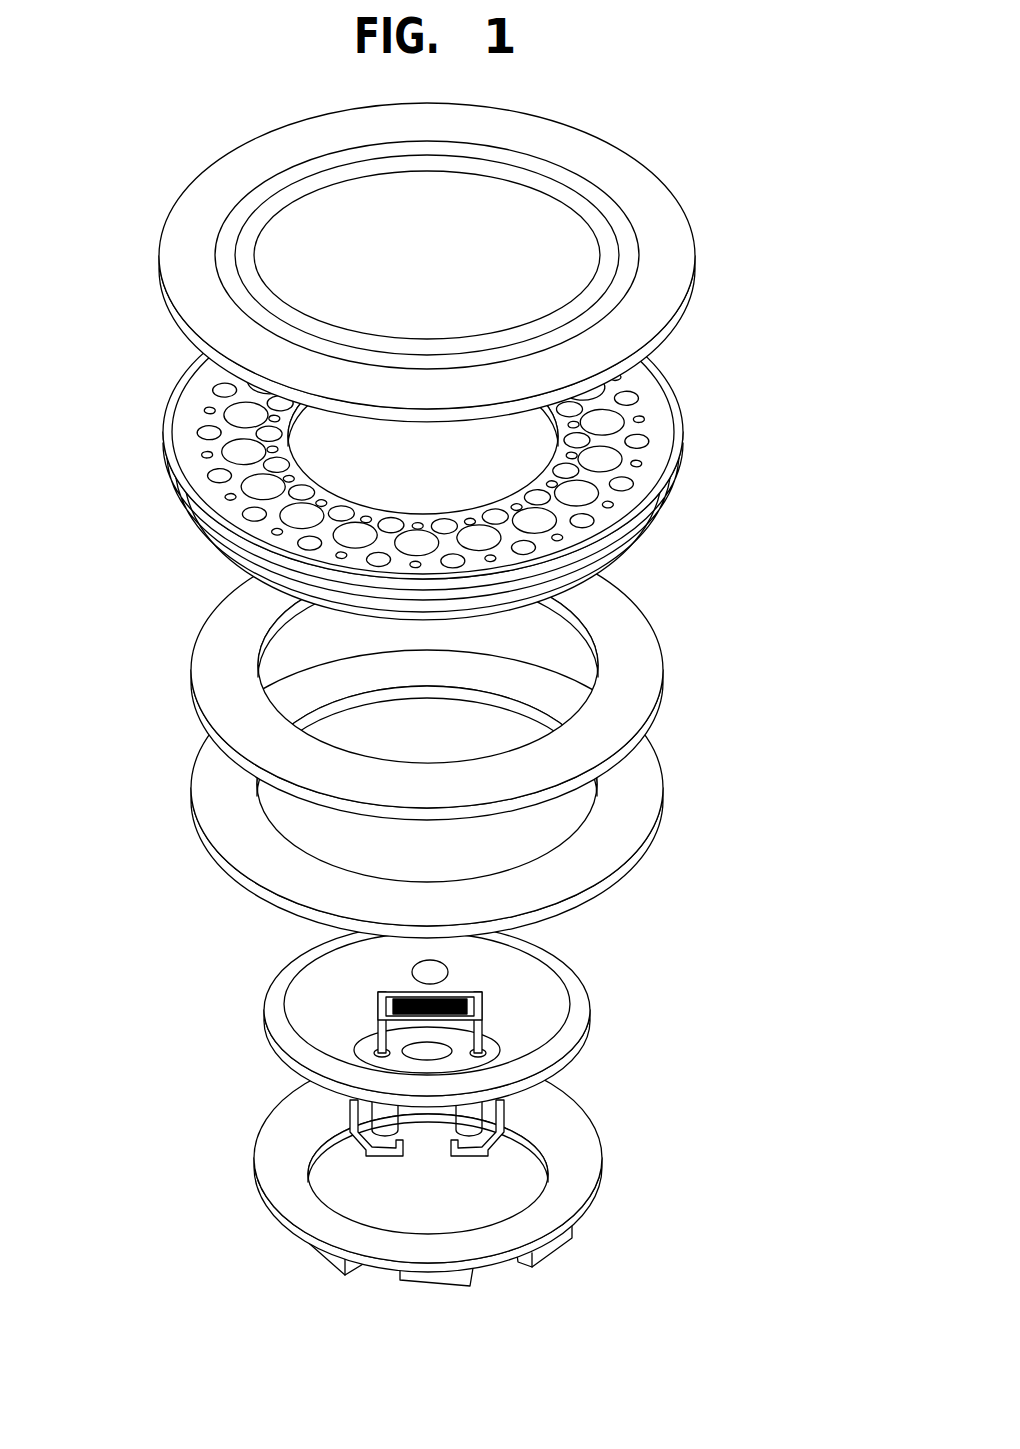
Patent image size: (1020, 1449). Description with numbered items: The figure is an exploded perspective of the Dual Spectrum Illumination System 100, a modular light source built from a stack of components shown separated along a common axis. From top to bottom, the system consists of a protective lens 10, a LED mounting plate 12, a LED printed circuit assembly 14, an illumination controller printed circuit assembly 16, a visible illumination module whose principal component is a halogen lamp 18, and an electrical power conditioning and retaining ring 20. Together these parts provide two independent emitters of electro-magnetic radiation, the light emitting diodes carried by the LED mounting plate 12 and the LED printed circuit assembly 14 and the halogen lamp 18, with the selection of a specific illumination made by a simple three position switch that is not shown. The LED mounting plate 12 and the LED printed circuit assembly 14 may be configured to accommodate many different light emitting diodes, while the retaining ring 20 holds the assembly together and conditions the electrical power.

The Dual Spectrum Illumination System 100 is at (162, 178).
The protective lens 10 is at (695, 251).
The LED mounting plate 12 is at (684, 457).
The LED printed circuit assembly 14 is at (663, 672).
The illumination controller printed circuit assembly 16 is at (663, 786).
The halogen lamp 18 is at (590, 1010).
The electrical power conditioning and retaining ring 20 is at (602, 1162).